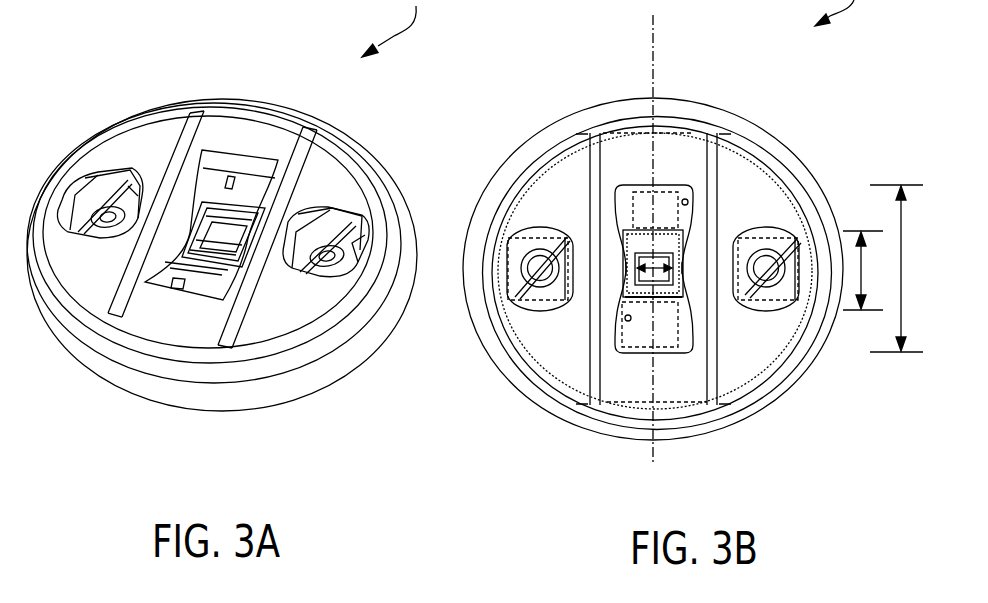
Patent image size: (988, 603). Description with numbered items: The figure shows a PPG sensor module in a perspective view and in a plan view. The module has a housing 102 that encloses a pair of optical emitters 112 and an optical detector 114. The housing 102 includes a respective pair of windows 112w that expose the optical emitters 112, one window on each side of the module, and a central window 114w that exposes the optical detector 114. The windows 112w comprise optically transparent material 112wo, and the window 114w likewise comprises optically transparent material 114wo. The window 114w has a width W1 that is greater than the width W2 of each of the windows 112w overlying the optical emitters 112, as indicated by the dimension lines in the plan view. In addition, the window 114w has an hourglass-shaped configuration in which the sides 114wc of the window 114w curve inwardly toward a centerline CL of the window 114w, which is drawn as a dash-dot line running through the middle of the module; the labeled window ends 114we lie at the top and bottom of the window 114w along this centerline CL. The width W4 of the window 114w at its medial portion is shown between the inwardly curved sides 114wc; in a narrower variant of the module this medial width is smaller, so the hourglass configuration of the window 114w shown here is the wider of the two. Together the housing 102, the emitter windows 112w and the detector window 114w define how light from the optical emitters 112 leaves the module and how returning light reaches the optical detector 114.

In FIG. 3A, the housing 102 is at (232, 97).
In FIG. 3B, the housing 102 is at (790, 150).
In FIG. 3A, the optical emitters 112 is at (108, 218).
In FIG. 3B, the optical emitters 112 is at (507, 262).
In FIG. 3A, the windows 112w is at (90, 178).
In FIG. 3B, the windows 112w is at (540, 227).
In FIG. 3A, the optically transparent material 112wo is at (83, 232).
In FIG. 3B, the optically transparent material 112wo is at (518, 250).
In FIG. 3A, the optical detector 114 is at (215, 243).
In FIG. 3B, the optical detector 114 is at (640, 353).
In FIG. 3A, the window 114w is at (248, 162).
In FIG. 3B, the window 114w is at (664, 186).
In FIG. 3A, the optically transparent material 114wo is at (203, 305).
In FIG. 3B, the optically transparent material 114wo is at (662, 330).
In FIG. 3B, the sides of the window 114wc is at (627, 252).
In FIG. 3B, the center block wall end 114we is at (587, 495).
In FIG. 3B, the width of the detector window W1 is at (905, 268).
In FIG. 3B, the width of the emitter windows W2 is at (872, 270).
In FIG. 3B, the width of the window at the medial portion W4 is at (650, 264).
In FIG. 3B, the centerline of the window CL is at (650, 464).